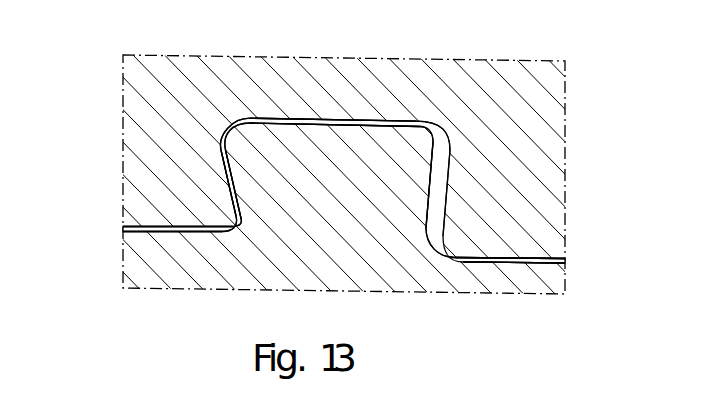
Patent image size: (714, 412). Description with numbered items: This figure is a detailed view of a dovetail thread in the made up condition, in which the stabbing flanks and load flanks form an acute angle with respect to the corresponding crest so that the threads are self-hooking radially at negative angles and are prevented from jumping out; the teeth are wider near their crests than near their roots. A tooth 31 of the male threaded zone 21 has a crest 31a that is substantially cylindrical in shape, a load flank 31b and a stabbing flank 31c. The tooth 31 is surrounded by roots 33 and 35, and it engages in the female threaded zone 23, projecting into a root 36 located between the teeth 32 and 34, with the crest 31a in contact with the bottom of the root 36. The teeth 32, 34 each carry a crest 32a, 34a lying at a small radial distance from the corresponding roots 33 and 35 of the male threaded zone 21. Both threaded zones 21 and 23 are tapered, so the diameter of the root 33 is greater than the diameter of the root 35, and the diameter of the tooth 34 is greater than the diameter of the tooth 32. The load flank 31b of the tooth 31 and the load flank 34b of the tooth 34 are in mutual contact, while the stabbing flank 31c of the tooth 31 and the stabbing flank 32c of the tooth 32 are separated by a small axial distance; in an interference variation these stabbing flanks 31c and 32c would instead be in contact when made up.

The threaded zone 21 is at (432, 280).
The threaded zone 23 is at (493, 88).
The tooth 31 is at (345, 182).
The crest 31a is at (305, 118).
The load flank 31b is at (227, 183).
The stabbing flank 31c is at (432, 181).
The tooth 32 is at (516, 226).
The crest 32a is at (508, 263).
The stabbing flank 32c is at (443, 208).
The root 33 is at (152, 226).
The tooth 34 is at (170, 173).
The crest 34a is at (198, 232).
The load flank 34b is at (247, 130).
The root 35 is at (541, 258).
The root 36 is at (442, 130).